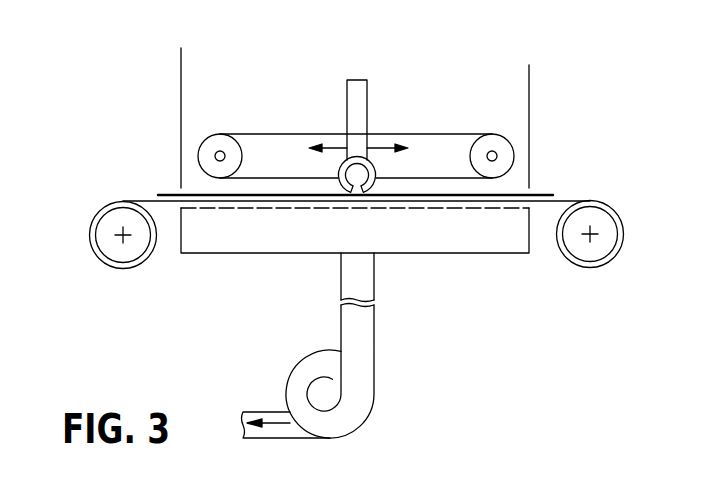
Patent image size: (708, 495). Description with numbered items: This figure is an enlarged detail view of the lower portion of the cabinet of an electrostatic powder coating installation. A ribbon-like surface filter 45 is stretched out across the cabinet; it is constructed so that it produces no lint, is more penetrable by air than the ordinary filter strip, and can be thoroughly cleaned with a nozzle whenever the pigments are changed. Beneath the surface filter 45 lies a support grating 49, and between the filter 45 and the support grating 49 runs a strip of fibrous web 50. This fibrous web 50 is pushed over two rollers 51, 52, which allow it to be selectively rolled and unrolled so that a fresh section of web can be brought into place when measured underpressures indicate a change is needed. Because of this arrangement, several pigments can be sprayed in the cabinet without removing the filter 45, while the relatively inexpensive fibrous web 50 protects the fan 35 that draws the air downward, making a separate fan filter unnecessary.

The fan 35 is at (305, 372).
The ribbon-like surface filter 45 is at (416, 189).
The support grating 49 is at (502, 206).
The strip of fibrous web 50 is at (448, 206).
The roller 51 is at (120, 250).
The roller 52 is at (592, 255).